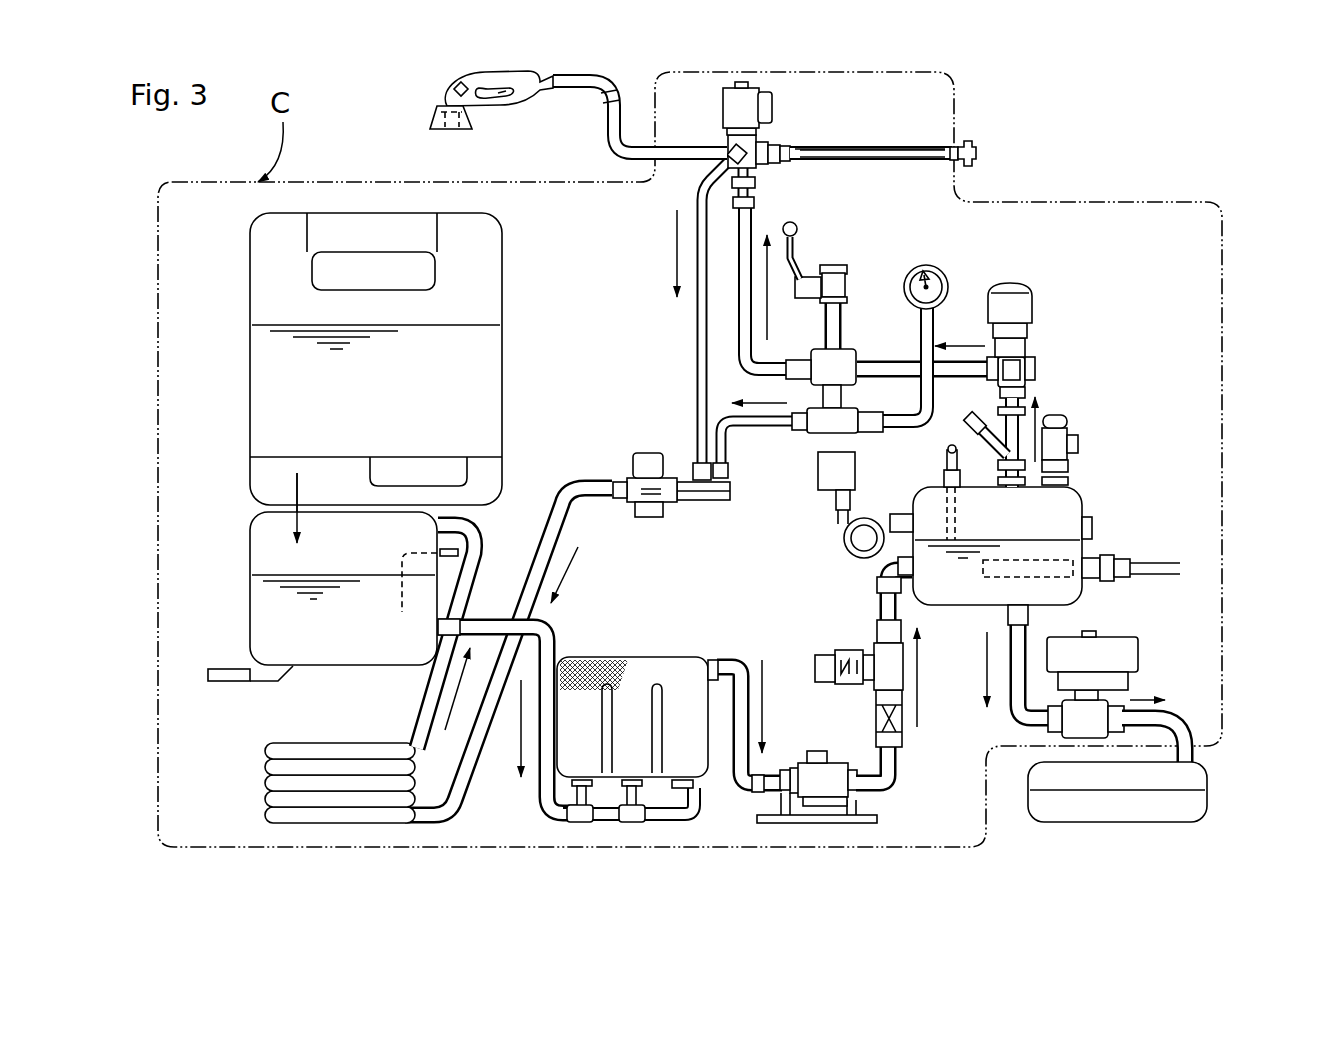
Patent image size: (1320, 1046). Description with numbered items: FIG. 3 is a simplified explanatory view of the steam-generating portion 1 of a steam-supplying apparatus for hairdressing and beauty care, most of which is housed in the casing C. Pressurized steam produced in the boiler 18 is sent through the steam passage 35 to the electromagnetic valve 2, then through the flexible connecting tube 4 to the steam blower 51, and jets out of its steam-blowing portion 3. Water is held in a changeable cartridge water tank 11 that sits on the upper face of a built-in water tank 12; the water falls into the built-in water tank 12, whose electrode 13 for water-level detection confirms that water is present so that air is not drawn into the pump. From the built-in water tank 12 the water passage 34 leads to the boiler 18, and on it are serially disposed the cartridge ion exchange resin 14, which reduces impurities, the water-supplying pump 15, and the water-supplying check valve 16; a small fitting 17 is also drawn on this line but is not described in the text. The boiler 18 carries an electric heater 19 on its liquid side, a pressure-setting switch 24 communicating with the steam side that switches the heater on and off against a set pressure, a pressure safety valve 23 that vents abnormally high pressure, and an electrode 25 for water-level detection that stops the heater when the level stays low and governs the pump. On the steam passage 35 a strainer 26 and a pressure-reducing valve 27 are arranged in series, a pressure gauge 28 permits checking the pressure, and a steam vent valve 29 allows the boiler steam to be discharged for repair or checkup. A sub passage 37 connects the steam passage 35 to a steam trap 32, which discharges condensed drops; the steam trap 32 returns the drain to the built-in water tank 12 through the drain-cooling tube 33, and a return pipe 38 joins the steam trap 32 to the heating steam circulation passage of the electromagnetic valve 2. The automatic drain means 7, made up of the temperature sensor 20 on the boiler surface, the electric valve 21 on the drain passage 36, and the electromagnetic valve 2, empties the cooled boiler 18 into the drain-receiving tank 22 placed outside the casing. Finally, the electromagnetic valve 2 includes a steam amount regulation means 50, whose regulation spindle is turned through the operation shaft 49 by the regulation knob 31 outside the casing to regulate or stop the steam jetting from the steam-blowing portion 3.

The steam-generating portion 1 is at (1094, 240).
The electromagnetic valve 2 is at (756, 110).
The steam-blowing portion 3 is at (447, 128).
The connecting tube 4 is at (608, 130).
The automatic drain means 7 is at (1118, 632).
The cartridge water tank 11 is at (250, 260).
The built-in water tank 12 is at (250, 548).
The electrode for water-level detection 13 is at (455, 552).
The cartridge ion exchange resin 14 is at (645, 657).
The water-supplying pump 15 is at (815, 752).
The water-supplying check valve 16 is at (905, 735).
The relief valve 17 is at (830, 655).
The boiler 18 is at (1060, 505).
The electric heater 19 is at (1112, 556).
The temperature sensor 20 is at (1092, 522).
The electric valve 21 is at (1140, 648).
The drain-receiving tank 22 is at (1207, 795).
The pressure safety valve 23 is at (1068, 422).
The pressure-setting switch 24 is at (822, 478).
The electrode for water-level detection 25 is at (942, 475).
The strainer 26 is at (1030, 405).
The pressure-reducing valve 27 is at (1038, 333).
The pressure gauge 28 is at (938, 276).
The steam vent valve 29 is at (848, 290).
The regulation knob 31 is at (962, 140).
The steam trap 32 is at (645, 453).
The drain-cooling tube 33 is at (300, 782).
The water passage 34 is at (736, 790).
The steam passage 35 is at (862, 360).
The drain passage 36 is at (998, 707).
The sub passage 37 is at (763, 425).
The return pipe 38 is at (698, 265).
The operation shaft 49 is at (868, 162).
The steam amount regulation means 50 is at (868, 137).
The steam blower 51 is at (452, 88).